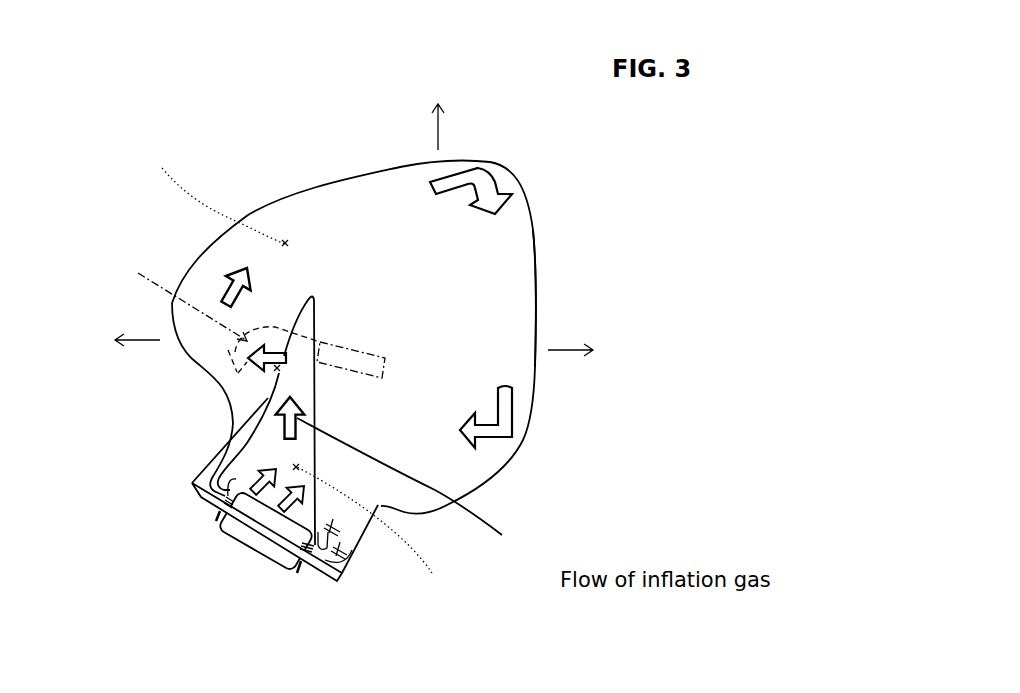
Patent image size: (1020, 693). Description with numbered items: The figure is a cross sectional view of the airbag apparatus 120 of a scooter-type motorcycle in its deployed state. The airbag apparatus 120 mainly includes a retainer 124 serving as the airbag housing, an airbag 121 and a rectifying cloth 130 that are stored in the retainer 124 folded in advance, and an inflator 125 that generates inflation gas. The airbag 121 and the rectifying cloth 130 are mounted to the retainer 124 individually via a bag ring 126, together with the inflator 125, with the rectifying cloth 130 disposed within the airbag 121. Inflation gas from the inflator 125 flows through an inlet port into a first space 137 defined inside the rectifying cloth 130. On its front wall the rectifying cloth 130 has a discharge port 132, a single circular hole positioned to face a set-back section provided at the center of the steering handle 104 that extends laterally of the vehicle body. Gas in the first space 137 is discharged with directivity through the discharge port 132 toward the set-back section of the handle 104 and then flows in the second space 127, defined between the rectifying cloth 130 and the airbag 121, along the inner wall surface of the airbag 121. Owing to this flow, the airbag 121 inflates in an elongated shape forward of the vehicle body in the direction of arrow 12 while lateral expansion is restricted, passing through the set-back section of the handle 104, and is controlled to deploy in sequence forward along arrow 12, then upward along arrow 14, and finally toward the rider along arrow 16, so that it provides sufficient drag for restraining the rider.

The airbag apparatus 120 is at (330, 157).
The airbag 121 is at (545, 261).
The second space 127 is at (216, 195).
The steering handle 104 is at (244, 312).
The arrow 12 is at (137, 329).
The arrow 14 is at (453, 127).
The arrow 16 is at (570, 340).
The rectifying cloth 130 is at (266, 402).
The discharge port 132 is at (277, 368).
The retainer 124 is at (365, 548).
The inflator 125 is at (244, 546).
The bag ring 126 is at (214, 516).
The first space 137 is at (381, 535).